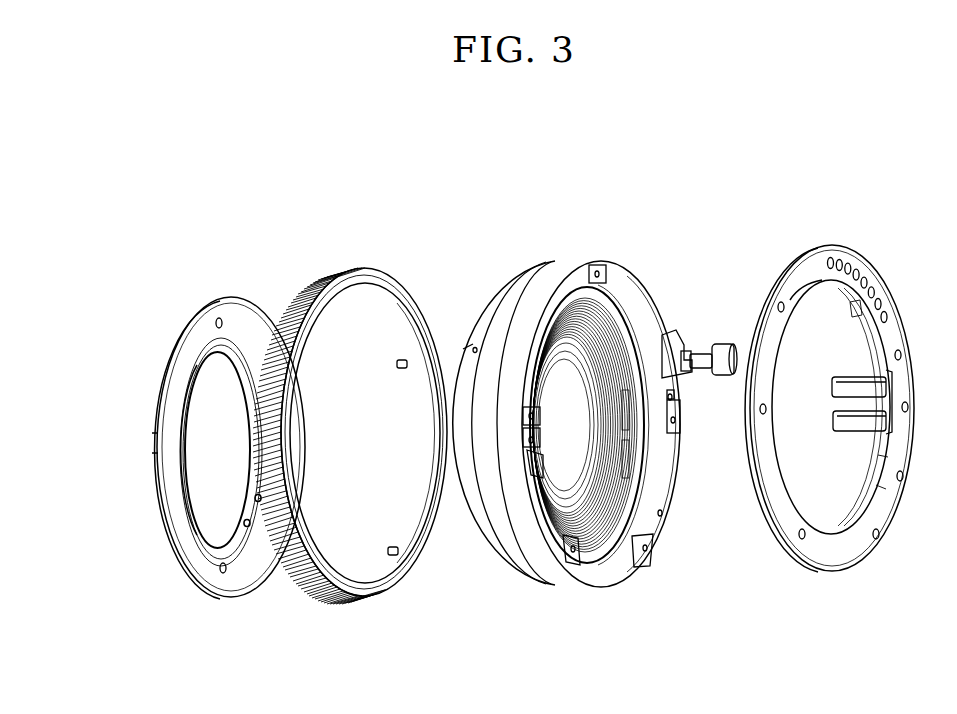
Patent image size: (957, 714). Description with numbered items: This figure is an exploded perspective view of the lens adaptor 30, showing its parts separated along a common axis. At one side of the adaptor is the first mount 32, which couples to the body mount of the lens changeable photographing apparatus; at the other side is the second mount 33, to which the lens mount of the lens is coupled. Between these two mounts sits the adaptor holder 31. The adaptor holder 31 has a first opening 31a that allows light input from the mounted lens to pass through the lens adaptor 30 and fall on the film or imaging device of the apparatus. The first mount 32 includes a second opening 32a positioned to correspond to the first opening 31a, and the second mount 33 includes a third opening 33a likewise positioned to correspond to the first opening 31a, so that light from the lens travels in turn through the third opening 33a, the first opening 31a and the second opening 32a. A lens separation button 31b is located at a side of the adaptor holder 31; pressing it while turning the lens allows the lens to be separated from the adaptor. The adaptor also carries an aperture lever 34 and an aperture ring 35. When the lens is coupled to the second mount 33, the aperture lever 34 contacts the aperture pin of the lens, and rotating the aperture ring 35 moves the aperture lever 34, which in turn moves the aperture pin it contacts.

The lens adaptor 30 is at (884, 191).
The adaptor holder 31 is at (599, 398).
The first opening 31a is at (630, 324).
The lens separation button 31b is at (725, 343).
The first mount 32 is at (228, 426).
The second opening 32a is at (203, 398).
The second mount 33 is at (829, 386).
The third opening 33a is at (818, 302).
The aperture lever 34 is at (832, 414).
The aperture ring 35 is at (328, 268).